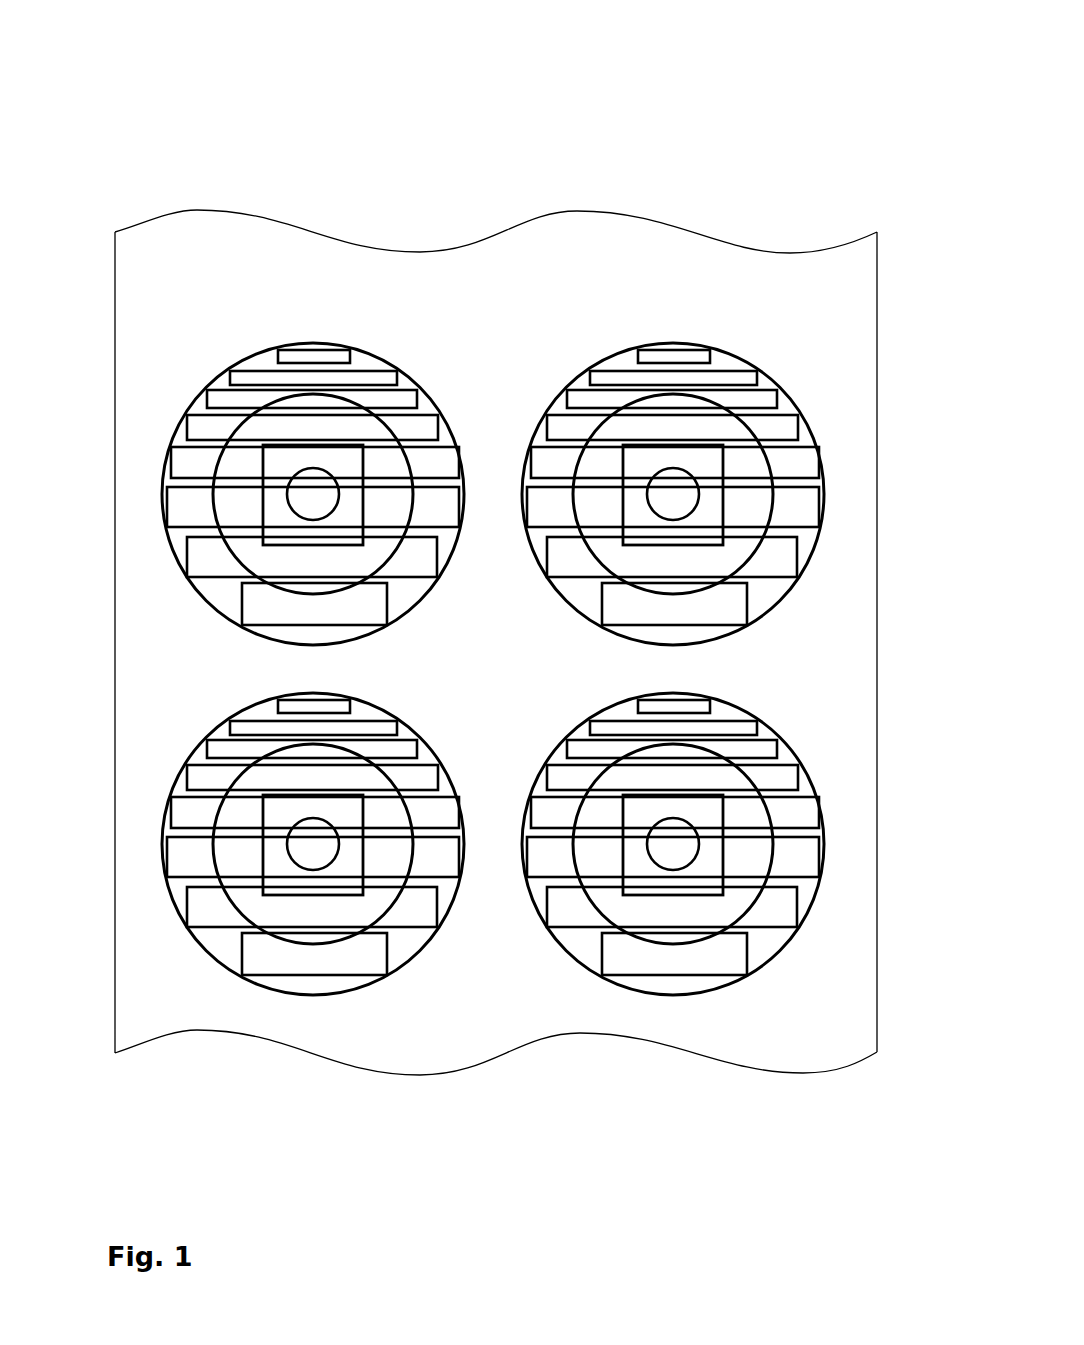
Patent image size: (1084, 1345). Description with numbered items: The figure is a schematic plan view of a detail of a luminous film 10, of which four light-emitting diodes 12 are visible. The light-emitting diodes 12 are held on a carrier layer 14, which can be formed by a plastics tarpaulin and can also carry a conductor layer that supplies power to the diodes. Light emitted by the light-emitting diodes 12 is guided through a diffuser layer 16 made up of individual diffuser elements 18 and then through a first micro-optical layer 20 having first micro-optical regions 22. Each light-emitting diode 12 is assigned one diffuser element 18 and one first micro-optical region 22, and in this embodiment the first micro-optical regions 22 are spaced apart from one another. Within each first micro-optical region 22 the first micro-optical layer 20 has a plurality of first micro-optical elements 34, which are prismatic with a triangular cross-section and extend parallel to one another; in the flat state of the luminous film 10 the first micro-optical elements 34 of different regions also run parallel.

The luminous film 10 is at (577, 125).
The light-emitting diode 12 is at (313, 468).
The carrier layer 14 is at (797, 272).
The diffuser layer 16 is at (414, 194).
The diffuser element 18 is at (344, 413).
The first micro-optical layer 20 is at (66, 614).
The first micro-optical region 22 is at (173, 551).
The first micro-optical element 34 is at (278, 351).